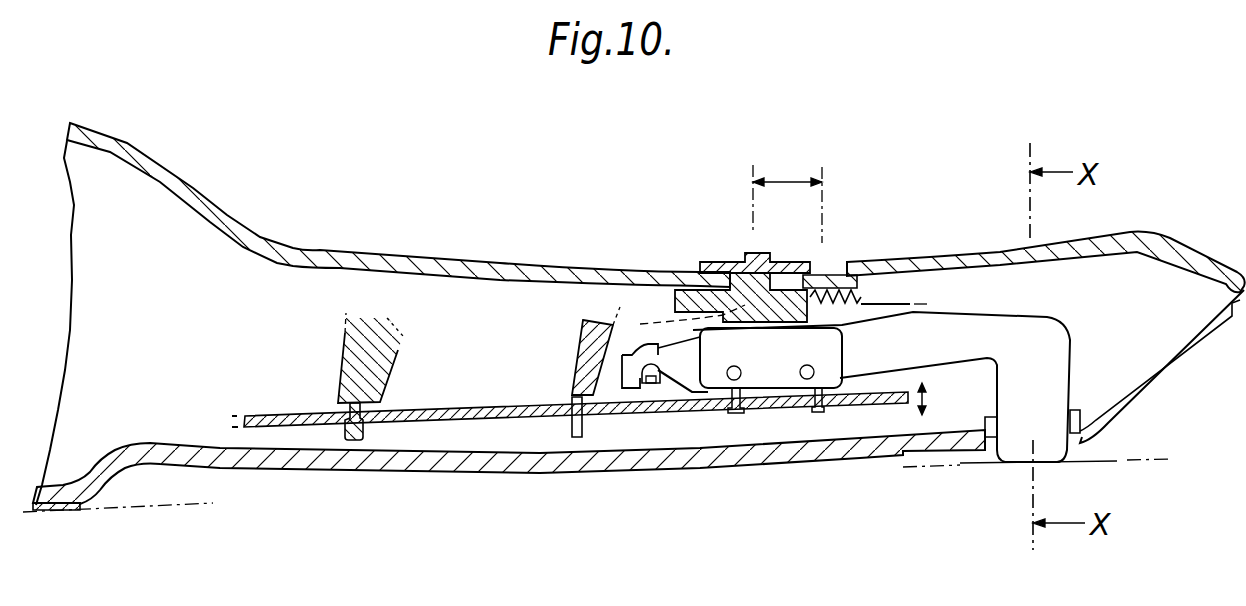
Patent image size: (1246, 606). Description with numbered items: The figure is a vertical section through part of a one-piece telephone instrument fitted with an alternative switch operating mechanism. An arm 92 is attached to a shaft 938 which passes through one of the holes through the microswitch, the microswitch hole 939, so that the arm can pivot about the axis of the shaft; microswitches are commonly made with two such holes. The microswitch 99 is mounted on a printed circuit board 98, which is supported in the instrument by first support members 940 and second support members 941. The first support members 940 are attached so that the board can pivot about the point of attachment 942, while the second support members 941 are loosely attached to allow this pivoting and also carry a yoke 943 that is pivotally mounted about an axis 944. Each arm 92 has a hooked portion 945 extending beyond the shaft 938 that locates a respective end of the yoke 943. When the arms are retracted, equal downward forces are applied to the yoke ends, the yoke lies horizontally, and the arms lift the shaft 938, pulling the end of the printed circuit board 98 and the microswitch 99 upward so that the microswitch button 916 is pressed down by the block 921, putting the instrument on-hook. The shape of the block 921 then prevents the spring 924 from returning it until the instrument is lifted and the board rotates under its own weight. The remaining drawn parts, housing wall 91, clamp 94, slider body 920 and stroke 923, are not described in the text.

The upper housing wall 91 is at (460, 263).
The arm 92 is at (978, 327).
The bracket clamp leg 94 is at (1055, 383).
The printed circuit board 98 is at (302, 421).
The microswitch 99 is at (843, 358).
The microswitch button 916 is at (675, 310).
The slider body 920 is at (743, 255).
The block 921 is at (660, 270).
The slider stroke 923 is at (786, 190).
The spring 924 is at (834, 273).
The shaft 938 is at (741, 374).
The microswitch hole 939 is at (800, 393).
The first support members 940 is at (355, 367).
The second support members 941 is at (578, 350).
The point of attachment 942 is at (381, 422).
The yoke 943 is at (648, 384).
The axis 944 is at (628, 363).
The hooked portion 945 is at (672, 380).